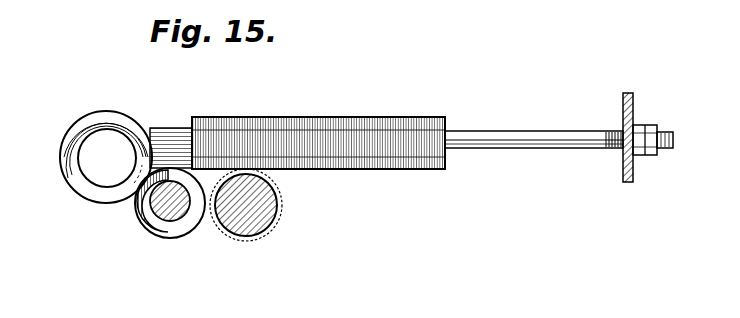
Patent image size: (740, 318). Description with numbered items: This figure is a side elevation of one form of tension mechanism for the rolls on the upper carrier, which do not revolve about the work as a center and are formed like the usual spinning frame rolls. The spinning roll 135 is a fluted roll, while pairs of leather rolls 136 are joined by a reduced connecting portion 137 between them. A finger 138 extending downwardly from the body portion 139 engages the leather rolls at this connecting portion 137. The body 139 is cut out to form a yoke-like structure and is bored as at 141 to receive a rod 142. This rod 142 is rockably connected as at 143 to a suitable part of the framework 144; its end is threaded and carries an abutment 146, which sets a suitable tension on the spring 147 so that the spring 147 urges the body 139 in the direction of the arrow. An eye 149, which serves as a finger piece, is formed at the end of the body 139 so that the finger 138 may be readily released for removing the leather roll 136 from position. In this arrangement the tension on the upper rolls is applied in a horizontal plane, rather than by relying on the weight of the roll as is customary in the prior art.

The spinning roll 135 is at (262, 210).
The leather rolls 136 is at (202, 225).
The reduced connecting portion 137 is at (180, 215).
The finger 138 is at (142, 217).
The body portion 139 is at (238, 117).
The bore 141 is at (446, 154).
The rod 142 is at (523, 121).
The rockable connection 143 is at (612, 148).
The framework 144 is at (633, 173).
The abutment 146 is at (222, 116).
The spring 147 is at (407, 116).
The eye 149 is at (93, 167).